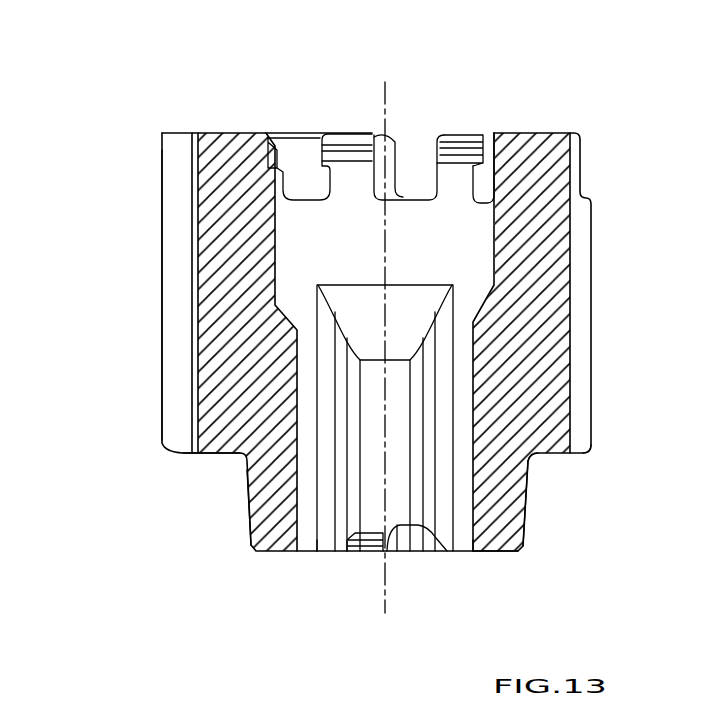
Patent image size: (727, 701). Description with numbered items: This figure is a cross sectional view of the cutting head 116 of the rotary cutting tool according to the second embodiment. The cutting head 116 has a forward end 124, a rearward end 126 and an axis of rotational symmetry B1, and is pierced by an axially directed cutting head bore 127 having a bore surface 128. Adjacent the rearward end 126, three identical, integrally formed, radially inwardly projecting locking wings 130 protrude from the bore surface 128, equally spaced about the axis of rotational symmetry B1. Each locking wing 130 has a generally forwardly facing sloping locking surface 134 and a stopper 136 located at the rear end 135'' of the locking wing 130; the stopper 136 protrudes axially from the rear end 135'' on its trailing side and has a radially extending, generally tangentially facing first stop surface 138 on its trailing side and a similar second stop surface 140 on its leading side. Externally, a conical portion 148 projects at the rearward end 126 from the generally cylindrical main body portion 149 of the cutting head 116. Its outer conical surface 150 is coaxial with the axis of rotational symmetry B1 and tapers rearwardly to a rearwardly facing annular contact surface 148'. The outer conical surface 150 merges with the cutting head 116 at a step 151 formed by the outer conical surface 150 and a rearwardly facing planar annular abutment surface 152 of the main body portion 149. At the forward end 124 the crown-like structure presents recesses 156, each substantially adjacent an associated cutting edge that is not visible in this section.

The cutting head 116 is at (158, 70).
The forward end 124 is at (143, 142).
The rearward end 126 is at (205, 535).
The cutting head bore 127 is at (450, 210).
The bore surface 128 is at (495, 172).
The locking wing 130 is at (421, 405).
The sloping locking surface 134 is at (410, 315).
The rear end 135'' is at (561, 551).
The stopper 136 is at (365, 547).
The first stop surface 138 is at (340, 540).
The second stop surface 140 is at (400, 550).
The conical portion 148 is at (604, 503).
The annular contact surface 148' is at (530, 576).
The main body portion 149 is at (147, 358).
The outer conical surface 150 is at (527, 485).
The step 151 is at (532, 456).
The abutment surface 152 is at (210, 457).
The recess 156 is at (415, 155).
The axis of rotational symmetry B1 is at (383, 104).